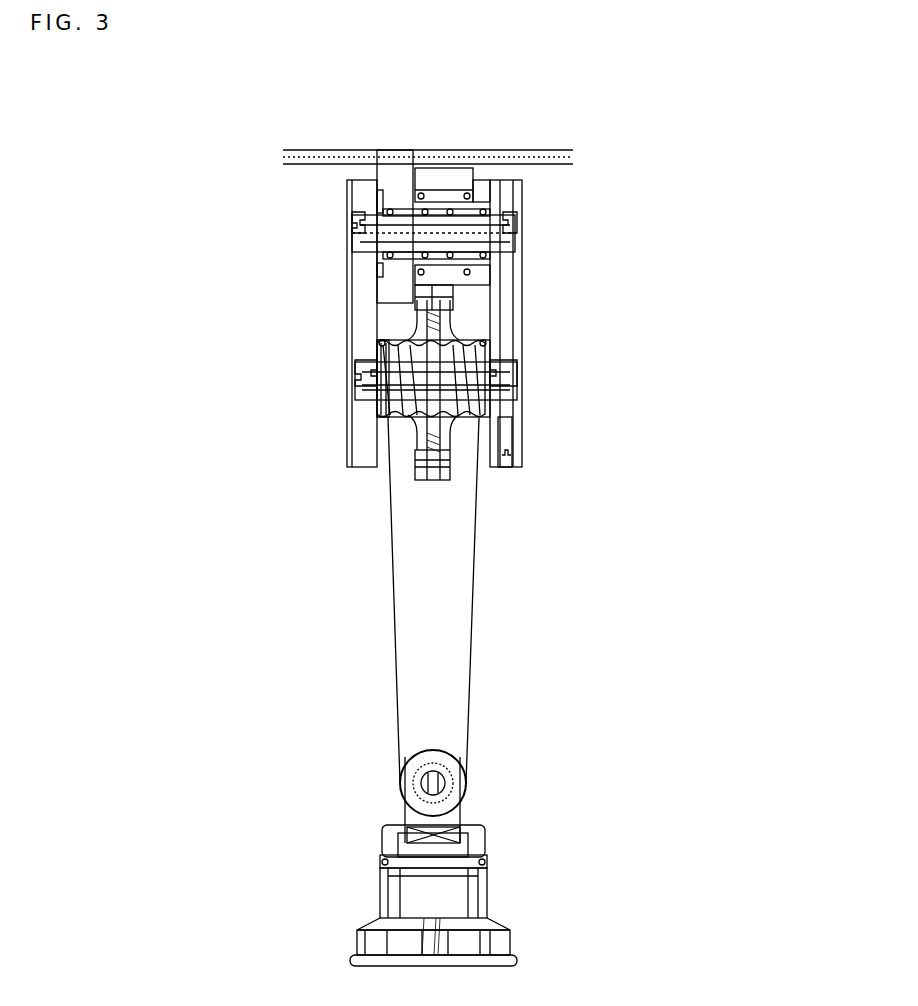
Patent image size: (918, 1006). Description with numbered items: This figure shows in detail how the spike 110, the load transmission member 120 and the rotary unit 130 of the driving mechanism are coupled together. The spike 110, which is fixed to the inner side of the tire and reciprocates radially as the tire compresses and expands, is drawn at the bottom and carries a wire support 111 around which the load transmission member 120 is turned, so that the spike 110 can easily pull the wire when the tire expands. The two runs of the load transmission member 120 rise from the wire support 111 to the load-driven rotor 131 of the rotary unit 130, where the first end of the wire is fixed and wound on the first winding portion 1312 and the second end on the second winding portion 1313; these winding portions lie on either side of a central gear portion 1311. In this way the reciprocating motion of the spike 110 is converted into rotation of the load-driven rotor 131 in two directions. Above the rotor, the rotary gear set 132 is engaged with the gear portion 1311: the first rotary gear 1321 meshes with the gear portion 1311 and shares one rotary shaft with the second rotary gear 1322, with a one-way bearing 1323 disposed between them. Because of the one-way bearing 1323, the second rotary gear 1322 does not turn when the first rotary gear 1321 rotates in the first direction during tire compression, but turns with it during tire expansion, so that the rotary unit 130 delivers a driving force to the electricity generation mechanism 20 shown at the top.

The electricity generation mechanism 20 is at (276, 160).
The rotary unit 130 is at (677, 218).
The rotary gear set 132 is at (533, 233).
The load-driven rotor 131 is at (533, 380).
The first rotary gear 1321 is at (463, 290).
The second rotary gear 1322 is at (393, 153).
The one-way bearing 1323 is at (442, 178).
The gear portion 1311 is at (415, 470).
The first winding portion 1312 is at (474, 422).
The second winding portion 1313 is at (405, 415).
The load transmission member 120 is at (470, 695).
The wire support 111 is at (467, 780).
The spike 110 is at (485, 890).